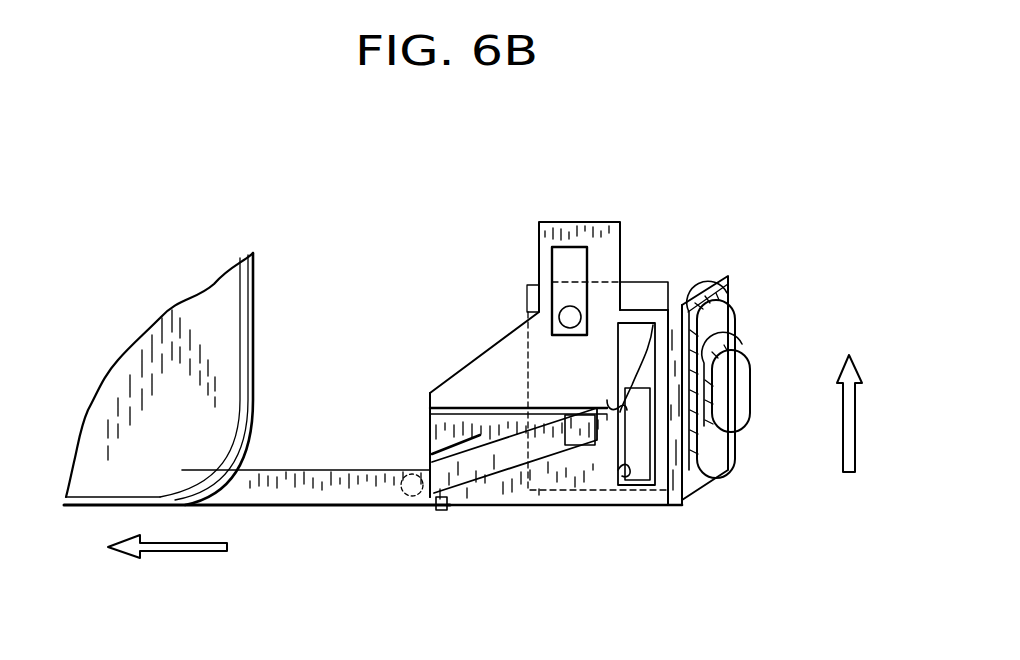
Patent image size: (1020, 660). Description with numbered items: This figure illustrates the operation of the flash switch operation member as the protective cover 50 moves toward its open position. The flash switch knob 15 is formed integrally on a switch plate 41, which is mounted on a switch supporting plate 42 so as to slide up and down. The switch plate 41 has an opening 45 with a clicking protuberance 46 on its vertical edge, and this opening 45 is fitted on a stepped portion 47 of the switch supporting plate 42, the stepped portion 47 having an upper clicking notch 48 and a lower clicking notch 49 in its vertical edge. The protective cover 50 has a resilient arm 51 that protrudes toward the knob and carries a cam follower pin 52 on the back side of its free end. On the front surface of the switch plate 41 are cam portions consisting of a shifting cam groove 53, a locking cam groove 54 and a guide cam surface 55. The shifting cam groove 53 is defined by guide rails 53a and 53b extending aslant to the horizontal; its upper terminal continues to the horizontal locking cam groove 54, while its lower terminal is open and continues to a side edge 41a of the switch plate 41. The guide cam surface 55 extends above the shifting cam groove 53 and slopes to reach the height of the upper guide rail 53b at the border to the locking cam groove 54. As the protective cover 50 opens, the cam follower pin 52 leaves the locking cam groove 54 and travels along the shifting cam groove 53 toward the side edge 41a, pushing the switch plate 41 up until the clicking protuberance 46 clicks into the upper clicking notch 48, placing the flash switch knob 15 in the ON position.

The flash switch knob 15 is at (750, 363).
The switch plate 41 is at (563, 208).
The side edge of the switch plate 41a is at (432, 412).
The switch supporting plate 42 is at (666, 256).
The opening 45 is at (653, 325).
The clicking protuberance 46 is at (612, 403).
The stepped portion 47 is at (650, 482).
The upper clicking notch 48 is at (673, 312).
The lower clicking notch 49 is at (622, 468).
The protective cover 50 is at (176, 434).
The arm 51 is at (292, 470).
The cam follower pin 52 is at (408, 500).
The shifting cam groove 53 is at (455, 475).
The lower guide rail 53a is at (440, 512).
The upper guide rail 53b is at (432, 458).
The locking cam groove 54 is at (578, 430).
The guide cam surface 55 is at (478, 412).